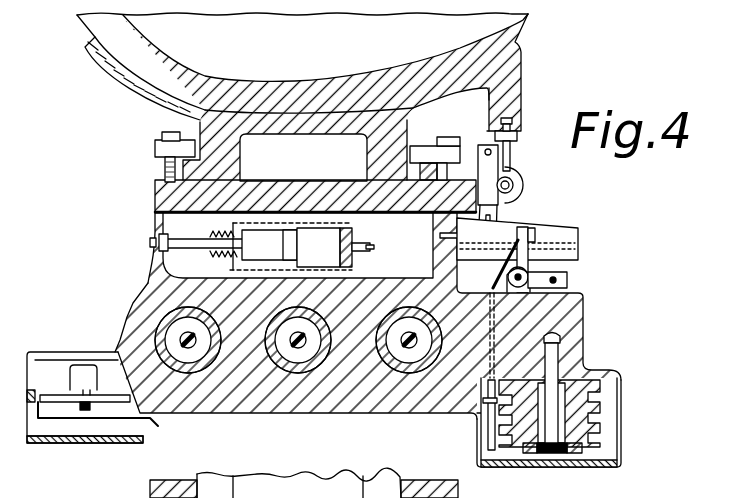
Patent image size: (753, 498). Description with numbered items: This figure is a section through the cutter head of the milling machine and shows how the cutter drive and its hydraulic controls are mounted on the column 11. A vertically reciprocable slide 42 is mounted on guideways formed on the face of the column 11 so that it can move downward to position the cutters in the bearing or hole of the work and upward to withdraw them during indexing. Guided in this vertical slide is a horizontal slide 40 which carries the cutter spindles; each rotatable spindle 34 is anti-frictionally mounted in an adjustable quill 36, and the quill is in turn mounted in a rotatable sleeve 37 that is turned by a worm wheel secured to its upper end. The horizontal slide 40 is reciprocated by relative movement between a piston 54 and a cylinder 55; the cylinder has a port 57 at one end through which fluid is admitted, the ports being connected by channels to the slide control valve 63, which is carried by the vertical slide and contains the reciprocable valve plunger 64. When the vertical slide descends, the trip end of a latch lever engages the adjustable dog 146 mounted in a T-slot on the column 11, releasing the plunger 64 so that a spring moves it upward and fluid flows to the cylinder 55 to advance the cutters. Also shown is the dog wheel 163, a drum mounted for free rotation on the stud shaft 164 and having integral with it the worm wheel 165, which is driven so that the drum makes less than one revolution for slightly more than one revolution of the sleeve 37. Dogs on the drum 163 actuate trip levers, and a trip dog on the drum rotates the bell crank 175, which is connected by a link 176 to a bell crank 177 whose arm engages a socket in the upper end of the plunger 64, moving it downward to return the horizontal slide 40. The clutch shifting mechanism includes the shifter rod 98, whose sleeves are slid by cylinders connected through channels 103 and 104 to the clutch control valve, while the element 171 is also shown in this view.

The column 11 is at (517, 38).
The rotatable spindle 34 is at (130, 321).
The adjustable quill 36 is at (207, 376).
The rotatable sleeve 37 is at (196, 374).
The horizontal slide 40 is at (156, 280).
The vertically reciprocable slide 42 is at (153, 203).
The piston 54 is at (293, 248).
The cylinder 55 is at (357, 257).
The port 57 is at (371, 246).
The slide control valve 63 is at (542, 190).
The valve plunger 64 is at (527, 185).
The shifter rod 98 is at (73, 395).
The channel 103 is at (53, 428).
The channel 104 is at (152, 430).
The adjustable dog 146 is at (519, 137).
The dog wheel 163 is at (587, 455).
The stud shaft 164 is at (575, 366).
The worm wheel 165 is at (598, 402).
The bar 171 is at (586, 268).
The bell crank 175 is at (483, 412).
The link 176 is at (496, 279).
The bell crank 177 is at (503, 214).